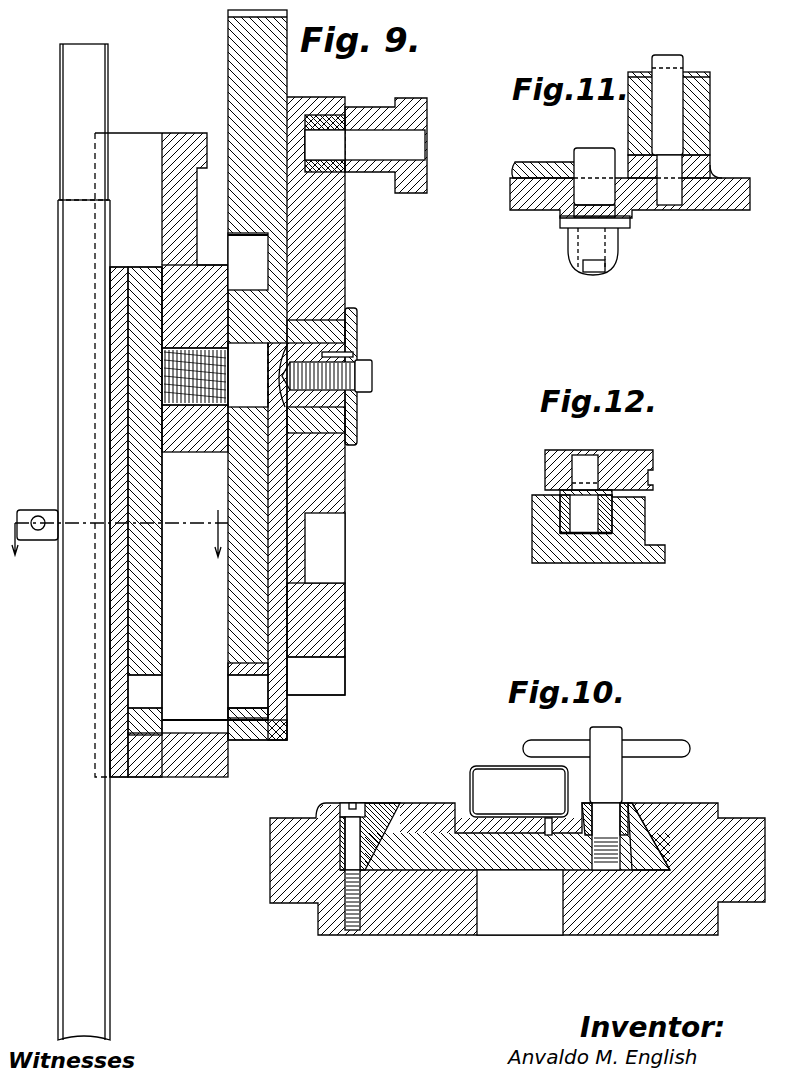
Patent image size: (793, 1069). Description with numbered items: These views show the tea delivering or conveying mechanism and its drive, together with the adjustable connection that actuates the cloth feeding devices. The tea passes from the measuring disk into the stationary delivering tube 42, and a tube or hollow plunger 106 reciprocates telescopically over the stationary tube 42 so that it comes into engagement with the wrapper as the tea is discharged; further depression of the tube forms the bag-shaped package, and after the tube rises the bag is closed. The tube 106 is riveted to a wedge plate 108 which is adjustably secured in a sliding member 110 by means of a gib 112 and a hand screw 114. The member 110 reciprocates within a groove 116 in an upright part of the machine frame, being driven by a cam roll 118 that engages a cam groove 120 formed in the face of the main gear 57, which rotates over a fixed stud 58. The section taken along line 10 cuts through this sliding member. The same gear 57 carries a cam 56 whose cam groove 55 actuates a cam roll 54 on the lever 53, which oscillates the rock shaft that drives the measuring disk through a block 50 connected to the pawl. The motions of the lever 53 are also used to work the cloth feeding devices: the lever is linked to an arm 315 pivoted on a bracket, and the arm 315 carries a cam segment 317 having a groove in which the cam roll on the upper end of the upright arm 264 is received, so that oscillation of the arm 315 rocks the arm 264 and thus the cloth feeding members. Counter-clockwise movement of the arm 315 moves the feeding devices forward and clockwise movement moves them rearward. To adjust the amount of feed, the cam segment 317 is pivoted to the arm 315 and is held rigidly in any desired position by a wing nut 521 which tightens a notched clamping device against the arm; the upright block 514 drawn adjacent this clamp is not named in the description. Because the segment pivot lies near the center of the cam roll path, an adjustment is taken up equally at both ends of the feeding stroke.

In FIG. 9, the section line 10 is at (120, 543).
In FIG. 9, the delivering tube 42 is at (78, 76).
In FIG. 9, the block 50 is at (175, 135).
In FIG. 10, the block 50 is at (292, 900).
In FIG. 9, the lever 53 is at (428, 181).
In FIG. 9, the cam roll 54 is at (330, 172).
In FIG. 9, the cam groove 55 is at (328, 551).
In FIG. 9, the cam 56 is at (330, 615).
In FIG. 9, the main gear 57 is at (236, 12).
In FIG. 9, the fixed stud 58 is at (330, 400).
In FIG. 9, the tube or hollow plunger 106 is at (85, 803).
In FIG. 10, the tube or hollow plunger 106 is at (498, 766).
In FIG. 9, the wedge plate 108 is at (118, 268).
In FIG. 10, the wedge plate 108 is at (542, 806).
In FIG. 9, the sliding member 110 is at (145, 268).
In FIG. 10, the sliding member 110 is at (420, 815).
In FIG. 10, the gib 112 is at (625, 815).
In FIG. 9, the hand screw 114 is at (33, 510).
In FIG. 10, the hand screw 114 is at (612, 737).
In FIG. 9, the groove 116 is at (125, 143).
In FIG. 10, the groove 116 is at (655, 840).
In FIG. 9, the cam roll 118 is at (265, 718).
In FIG. 9, the cam groove 120 is at (245, 250).
In FIG. 12, the upright arm 264 is at (653, 466).
In FIG. 11, the arm 315 is at (698, 210).
In FIG. 11, the cam segment 317 is at (540, 166).
In FIG. 11, the upright block 514 is at (695, 113).
In FIG. 11, the wing nut 521 is at (612, 262).